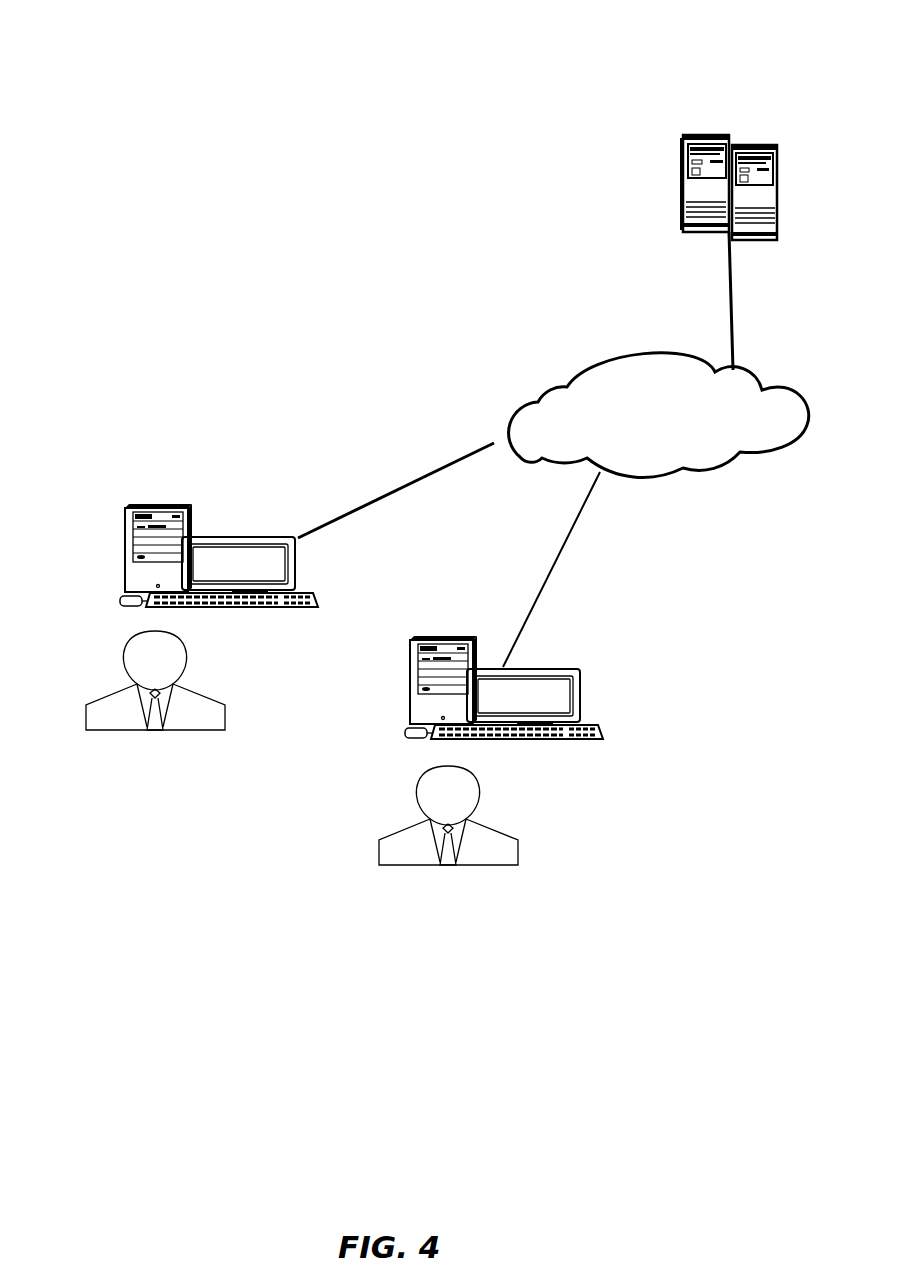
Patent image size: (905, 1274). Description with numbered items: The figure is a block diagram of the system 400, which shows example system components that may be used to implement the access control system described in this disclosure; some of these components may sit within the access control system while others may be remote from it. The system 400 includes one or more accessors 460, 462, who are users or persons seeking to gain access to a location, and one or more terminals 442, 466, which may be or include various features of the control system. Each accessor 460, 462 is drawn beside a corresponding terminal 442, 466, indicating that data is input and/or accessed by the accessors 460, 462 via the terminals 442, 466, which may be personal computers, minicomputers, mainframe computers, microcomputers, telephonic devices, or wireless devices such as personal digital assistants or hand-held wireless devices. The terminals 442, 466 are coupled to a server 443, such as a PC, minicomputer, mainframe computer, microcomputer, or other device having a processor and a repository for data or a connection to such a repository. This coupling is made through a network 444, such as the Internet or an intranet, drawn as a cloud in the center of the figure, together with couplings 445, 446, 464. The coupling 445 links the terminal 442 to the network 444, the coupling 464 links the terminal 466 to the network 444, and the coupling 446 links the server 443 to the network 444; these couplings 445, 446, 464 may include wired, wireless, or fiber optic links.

The system 400 is at (170, 90).
The terminal 442 is at (155, 505).
The server 443 is at (708, 132).
The network 444 is at (583, 372).
The coupling 445 is at (340, 525).
The coupling 446 is at (733, 305).
The accessor 460 is at (115, 688).
The accessor 462 is at (495, 828).
The coupling 464 is at (575, 540).
The terminal 466 is at (578, 668).